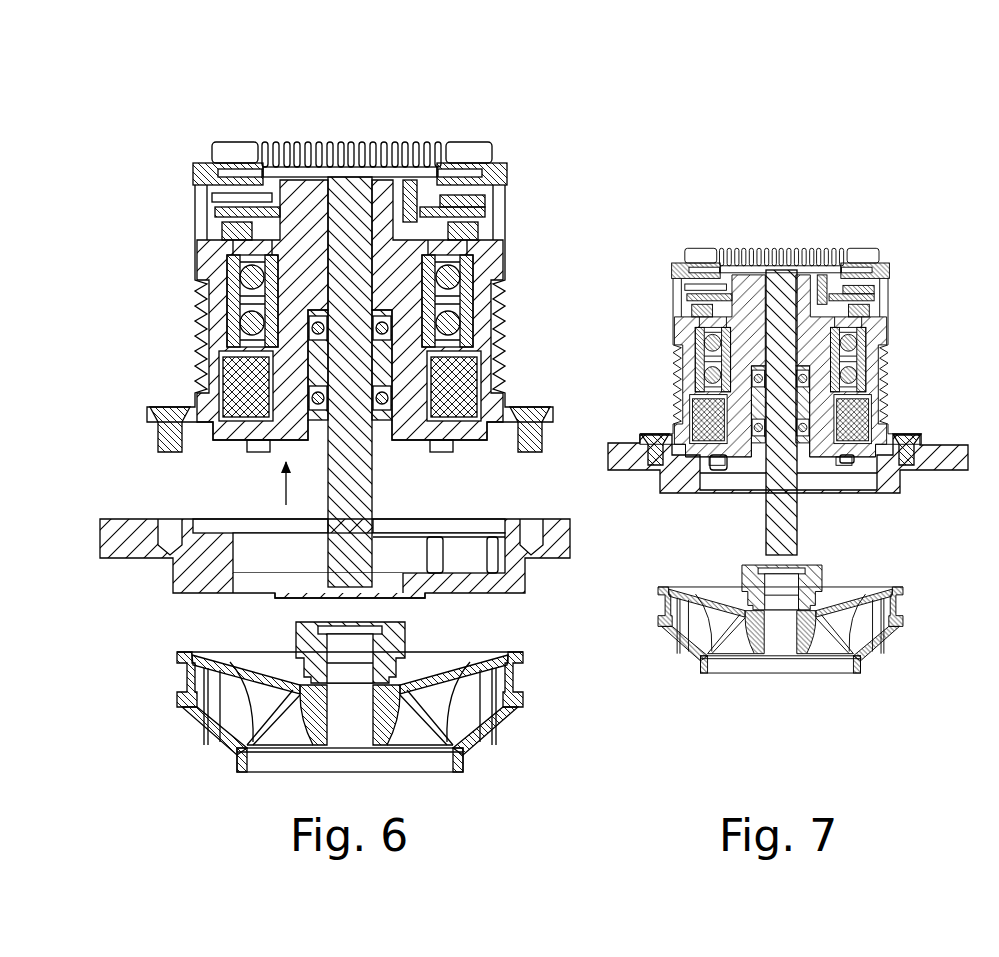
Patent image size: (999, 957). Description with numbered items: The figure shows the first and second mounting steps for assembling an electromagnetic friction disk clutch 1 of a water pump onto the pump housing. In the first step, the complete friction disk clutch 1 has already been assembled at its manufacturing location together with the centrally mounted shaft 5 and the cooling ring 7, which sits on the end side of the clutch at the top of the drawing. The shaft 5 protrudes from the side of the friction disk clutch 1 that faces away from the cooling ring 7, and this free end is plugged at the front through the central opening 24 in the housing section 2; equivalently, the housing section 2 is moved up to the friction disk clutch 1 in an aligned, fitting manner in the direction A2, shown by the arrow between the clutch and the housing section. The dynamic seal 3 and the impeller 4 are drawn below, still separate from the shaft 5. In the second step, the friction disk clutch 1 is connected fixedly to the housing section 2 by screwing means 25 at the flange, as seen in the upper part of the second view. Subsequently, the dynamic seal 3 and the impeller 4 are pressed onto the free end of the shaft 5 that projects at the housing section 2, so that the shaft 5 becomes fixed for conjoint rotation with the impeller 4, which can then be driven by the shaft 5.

In FIG. 6, the friction disk clutch 1 is at (366, 252).
In FIG. 7, the friction disk clutch 1 is at (906, 324).
In FIG. 6, the housing section 2 is at (541, 512).
In FIG. 7, the housing section 2 is at (622, 440).
In FIG. 6, the dynamic seal 3 is at (407, 628).
In FIG. 7, the dynamic seal 3 is at (823, 570).
In FIG. 6, the impeller 4 is at (491, 735).
In FIG. 7, the impeller 4 is at (882, 660).
In FIG. 6, the shaft 5 is at (367, 470).
In FIG. 7, the shaft 5 is at (792, 505).
In FIG. 6, the cooling ring 7 is at (456, 134).
In FIG. 6, the central opening 24 is at (403, 598).
In FIG. 7, the screwing means 25 is at (652, 432).
In FIG. 6, the direction A2 is at (283, 478).